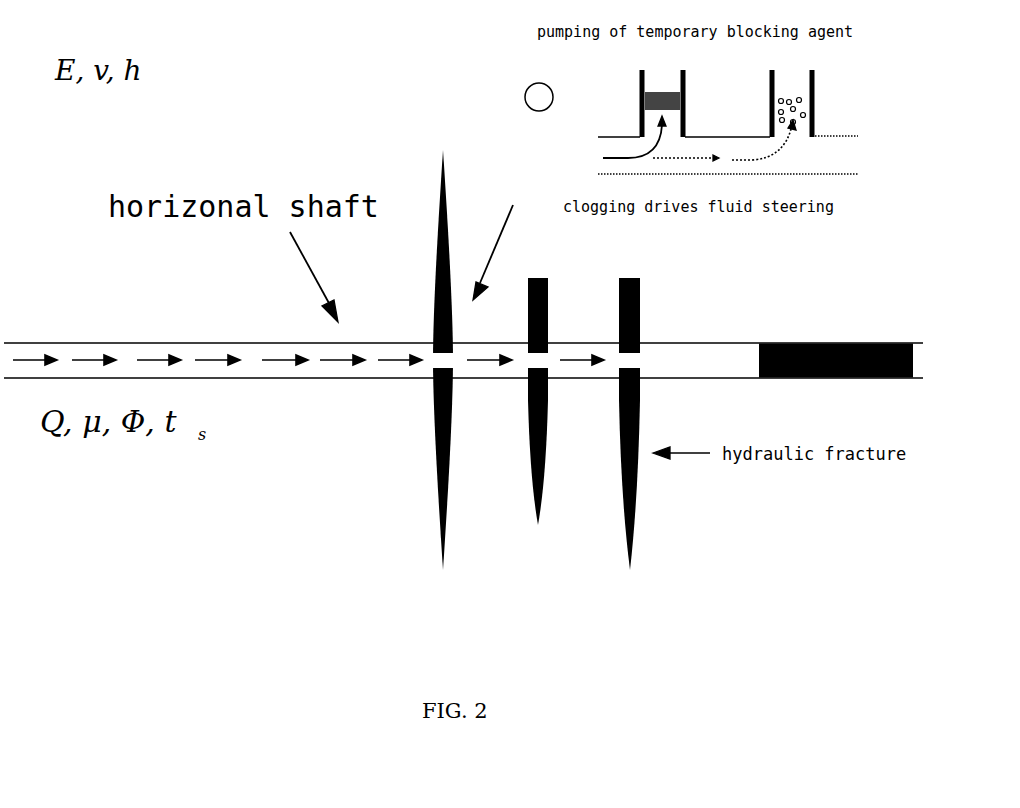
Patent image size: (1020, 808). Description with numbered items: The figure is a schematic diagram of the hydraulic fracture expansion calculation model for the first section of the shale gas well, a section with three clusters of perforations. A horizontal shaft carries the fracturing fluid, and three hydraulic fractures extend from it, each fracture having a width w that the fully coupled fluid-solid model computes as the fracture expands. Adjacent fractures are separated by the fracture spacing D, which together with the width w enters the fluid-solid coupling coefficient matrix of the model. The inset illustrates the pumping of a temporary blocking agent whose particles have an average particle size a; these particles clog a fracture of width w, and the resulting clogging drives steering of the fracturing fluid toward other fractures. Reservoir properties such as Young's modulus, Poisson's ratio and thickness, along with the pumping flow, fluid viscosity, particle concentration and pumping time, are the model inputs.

The fracture spacing D is at (528, 488).
The average particle size of the temporary blocking agent a is at (553, 119).
The width of a hydraulic fracture w is at (679, 85).